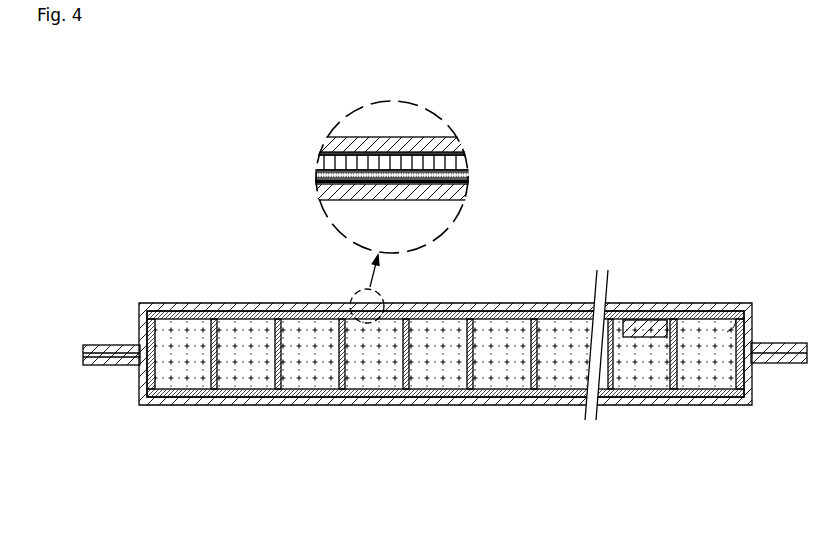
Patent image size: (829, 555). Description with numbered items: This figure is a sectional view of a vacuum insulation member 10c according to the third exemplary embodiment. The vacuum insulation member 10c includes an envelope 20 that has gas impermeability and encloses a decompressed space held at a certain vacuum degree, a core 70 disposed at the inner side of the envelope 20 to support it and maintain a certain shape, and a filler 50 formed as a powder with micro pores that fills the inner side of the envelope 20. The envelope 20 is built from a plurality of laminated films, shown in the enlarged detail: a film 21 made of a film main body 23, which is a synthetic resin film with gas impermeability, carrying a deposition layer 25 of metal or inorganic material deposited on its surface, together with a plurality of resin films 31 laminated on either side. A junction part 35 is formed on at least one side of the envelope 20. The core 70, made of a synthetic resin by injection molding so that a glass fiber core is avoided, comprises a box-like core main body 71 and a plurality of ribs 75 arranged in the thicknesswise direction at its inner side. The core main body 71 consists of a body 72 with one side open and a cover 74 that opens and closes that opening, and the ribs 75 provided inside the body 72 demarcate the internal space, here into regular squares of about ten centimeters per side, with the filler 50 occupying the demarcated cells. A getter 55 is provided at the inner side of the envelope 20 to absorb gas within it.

The vacuum insulation member 10c is at (177, 217).
The envelope 20 is at (253, 298).
The film 21 is at (550, 123).
The film main body 23 is at (450, 162).
The deposition layer 25 is at (467, 173).
The resin film 31 is at (408, 137).
The junction part 35 is at (108, 345).
The filler 50 is at (373, 370).
The getter 55 is at (643, 320).
The core 70 is at (508, 495).
The core main body 71 is at (435, 393).
The body 72 is at (727, 320).
The cover 74 is at (696, 320).
The rib 75 is at (475, 360).